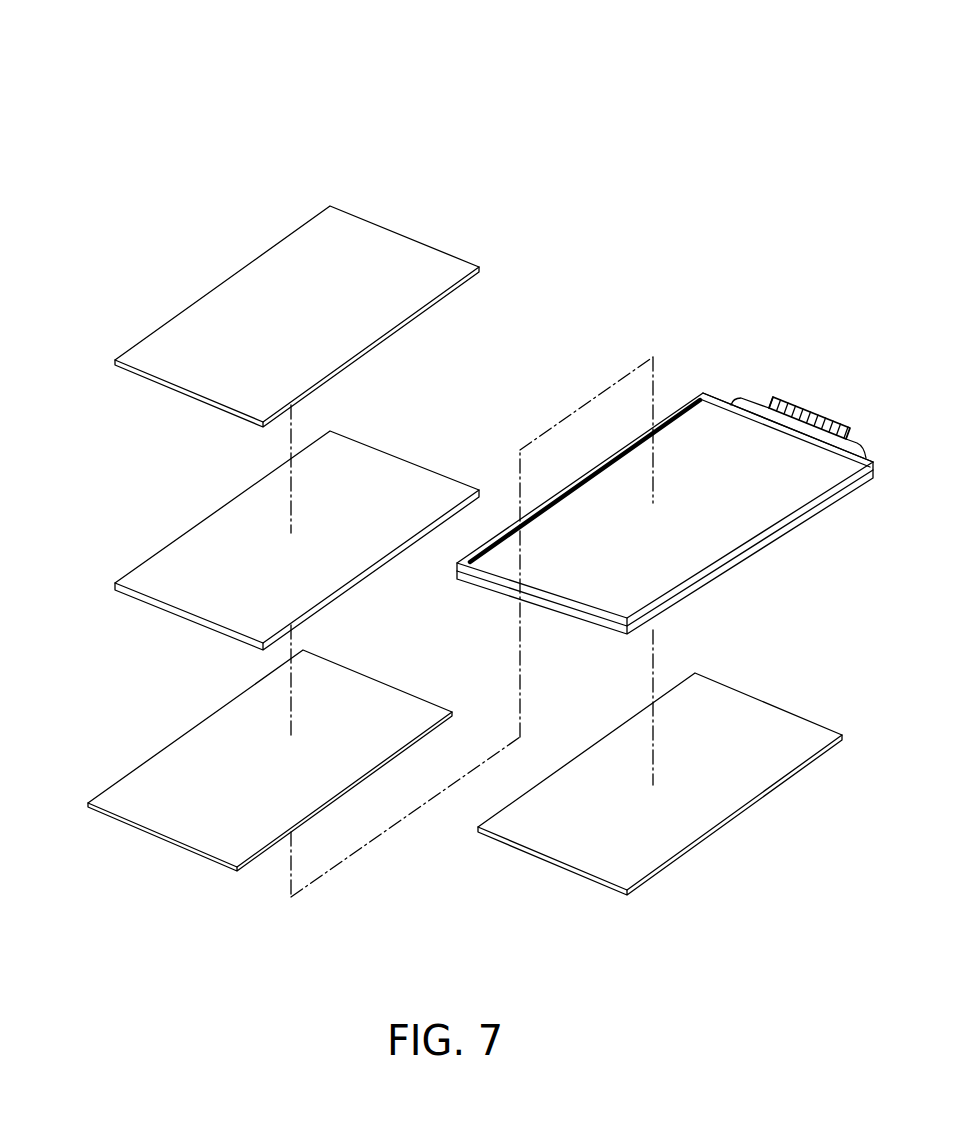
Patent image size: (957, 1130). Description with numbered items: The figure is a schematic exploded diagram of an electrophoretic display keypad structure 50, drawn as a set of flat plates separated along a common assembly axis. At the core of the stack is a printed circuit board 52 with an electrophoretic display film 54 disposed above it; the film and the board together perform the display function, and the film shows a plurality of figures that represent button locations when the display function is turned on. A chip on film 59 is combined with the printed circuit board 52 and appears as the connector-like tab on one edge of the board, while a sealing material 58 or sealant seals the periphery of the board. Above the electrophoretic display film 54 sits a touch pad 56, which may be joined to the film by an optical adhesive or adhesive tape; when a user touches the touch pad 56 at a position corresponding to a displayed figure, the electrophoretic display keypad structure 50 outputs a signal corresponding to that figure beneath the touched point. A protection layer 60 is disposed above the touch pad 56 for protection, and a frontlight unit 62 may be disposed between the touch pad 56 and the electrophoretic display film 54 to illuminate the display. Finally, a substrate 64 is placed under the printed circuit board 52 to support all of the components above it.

The electrophoretic display keypad structure 50 is at (693, 117).
The printed circuit board 52 is at (721, 396).
The electrophoretic display film 54 is at (697, 532).
The touch pad 56 is at (148, 573).
The sealing material 58 is at (788, 512).
The chip on film 59 is at (785, 398).
The protection layer 60 is at (137, 357).
The frontlight unit 62 is at (120, 793).
The substrate 64 is at (810, 735).